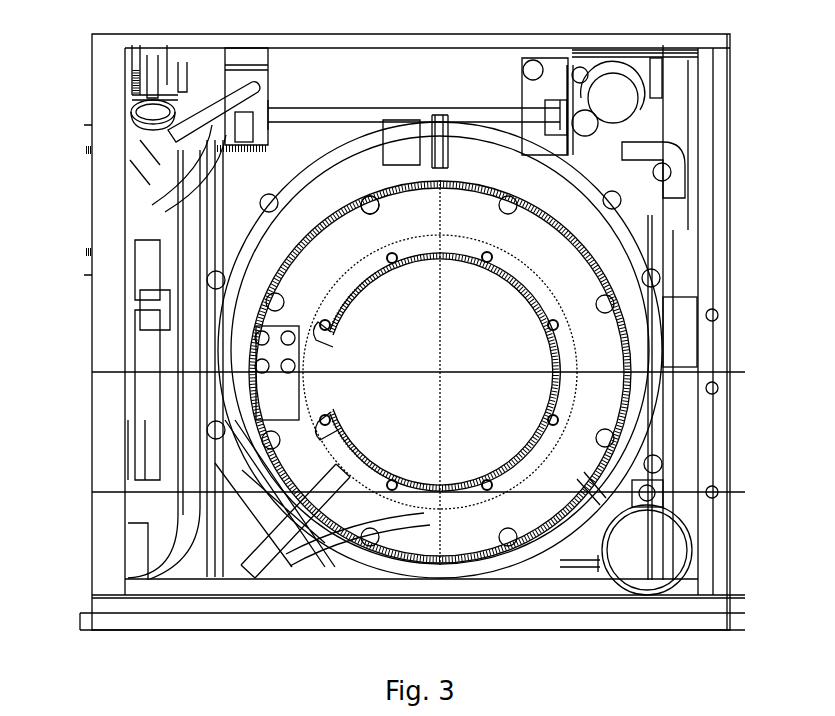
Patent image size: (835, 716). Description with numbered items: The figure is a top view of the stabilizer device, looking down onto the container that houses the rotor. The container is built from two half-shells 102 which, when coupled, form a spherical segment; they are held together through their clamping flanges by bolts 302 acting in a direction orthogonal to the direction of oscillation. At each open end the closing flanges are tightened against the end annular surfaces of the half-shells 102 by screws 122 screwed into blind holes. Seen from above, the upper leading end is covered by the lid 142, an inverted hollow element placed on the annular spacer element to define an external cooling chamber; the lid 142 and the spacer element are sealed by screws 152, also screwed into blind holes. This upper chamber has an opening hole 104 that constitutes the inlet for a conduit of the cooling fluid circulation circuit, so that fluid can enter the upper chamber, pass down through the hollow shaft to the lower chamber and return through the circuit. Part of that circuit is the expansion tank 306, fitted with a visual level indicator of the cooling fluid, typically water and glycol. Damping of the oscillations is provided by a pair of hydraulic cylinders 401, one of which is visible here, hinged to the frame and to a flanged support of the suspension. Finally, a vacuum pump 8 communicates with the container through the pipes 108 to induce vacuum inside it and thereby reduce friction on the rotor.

The vacuum pump 8 is at (652, 573).
The half-shell 102 is at (605, 235).
The opening hole 104 is at (355, 478).
The pipes 108 is at (485, 588).
The screws 122 is at (360, 214).
The lid 142 is at (495, 325).
The screws 152 is at (391, 262).
The bolts 302 is at (380, 140).
The expansion tank 306 is at (613, 80).
The hydraulic cylinder 401 is at (152, 323).